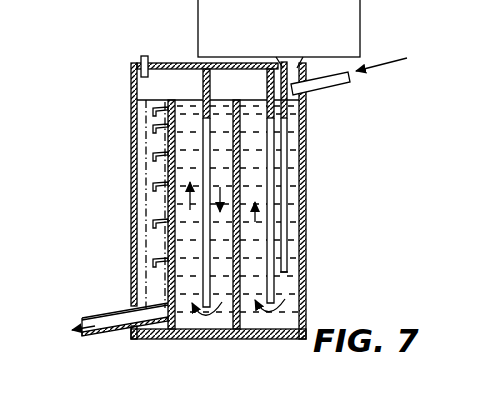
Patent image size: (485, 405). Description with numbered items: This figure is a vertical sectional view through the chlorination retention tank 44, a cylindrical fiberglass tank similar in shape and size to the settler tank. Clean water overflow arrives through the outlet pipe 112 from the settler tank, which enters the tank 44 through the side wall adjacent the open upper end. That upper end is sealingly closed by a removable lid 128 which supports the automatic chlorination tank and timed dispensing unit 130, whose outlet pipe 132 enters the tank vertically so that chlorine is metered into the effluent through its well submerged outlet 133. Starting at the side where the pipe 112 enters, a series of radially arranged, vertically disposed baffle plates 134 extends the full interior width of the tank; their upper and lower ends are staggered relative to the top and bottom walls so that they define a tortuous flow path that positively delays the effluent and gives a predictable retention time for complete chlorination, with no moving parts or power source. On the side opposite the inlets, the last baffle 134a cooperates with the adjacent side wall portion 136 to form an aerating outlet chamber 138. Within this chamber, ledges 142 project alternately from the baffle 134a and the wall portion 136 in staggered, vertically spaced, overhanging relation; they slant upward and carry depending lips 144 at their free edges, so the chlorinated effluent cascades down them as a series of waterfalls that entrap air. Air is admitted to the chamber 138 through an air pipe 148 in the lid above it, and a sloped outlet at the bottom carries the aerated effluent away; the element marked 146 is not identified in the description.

The chlorination retention tank 44 is at (128, 156).
The outlet pipe 112 is at (336, 87).
The removable lid 128 is at (172, 63).
The automatic chlorination tank and timed dispensing unit 130 is at (296, 28).
The outlet pipe 132 is at (306, 58).
The outlet 133 is at (285, 267).
The baffle plates 134 is at (272, 320).
The last baffle 134a is at (165, 339).
The side wall portion 136 is at (138, 182).
The aerating outlet chamber 138 is at (143, 147).
The ledges 142 is at (143, 208).
The depending lips 144 is at (143, 230).
The baffle 146 is at (143, 260).
The air pipe 148 is at (141, 60).